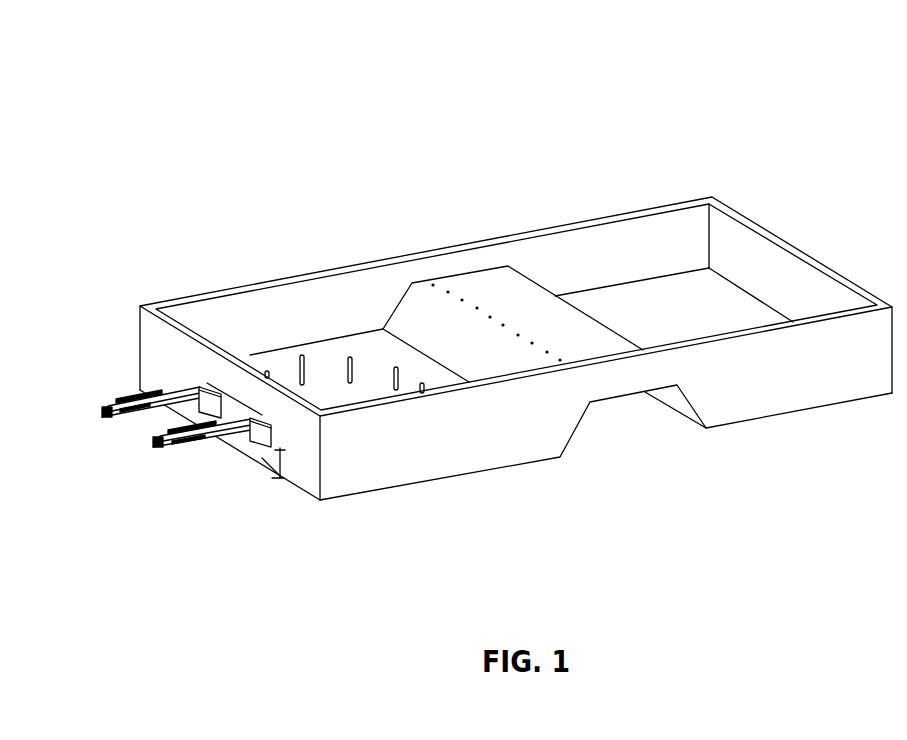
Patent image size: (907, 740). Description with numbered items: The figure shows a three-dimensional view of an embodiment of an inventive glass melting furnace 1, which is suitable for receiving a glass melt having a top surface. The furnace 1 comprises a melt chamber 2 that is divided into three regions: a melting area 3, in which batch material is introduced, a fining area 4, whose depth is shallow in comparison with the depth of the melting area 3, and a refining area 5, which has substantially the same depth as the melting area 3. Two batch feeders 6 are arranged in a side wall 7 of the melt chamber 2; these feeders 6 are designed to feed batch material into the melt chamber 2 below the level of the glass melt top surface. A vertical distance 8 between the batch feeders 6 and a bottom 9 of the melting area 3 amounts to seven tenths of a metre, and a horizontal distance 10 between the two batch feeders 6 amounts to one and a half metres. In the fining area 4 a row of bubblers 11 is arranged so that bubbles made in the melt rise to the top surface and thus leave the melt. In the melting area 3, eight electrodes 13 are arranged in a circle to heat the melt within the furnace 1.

The glass melting furnace 1 is at (813, 177).
The melt chamber 2 is at (198, 158).
The melting area 3 is at (357, 300).
The fining area 4 is at (480, 245).
The refining area 5 is at (620, 243).
The batch feeders 6 is at (105, 420).
The side wall 7 is at (158, 353).
The vertical distance 8 is at (273, 468).
The bottom 9 is at (358, 498).
The horizontal distance 10 is at (233, 397).
The row of bubblers 11 is at (430, 283).
The electrodes 13 is at (300, 368).